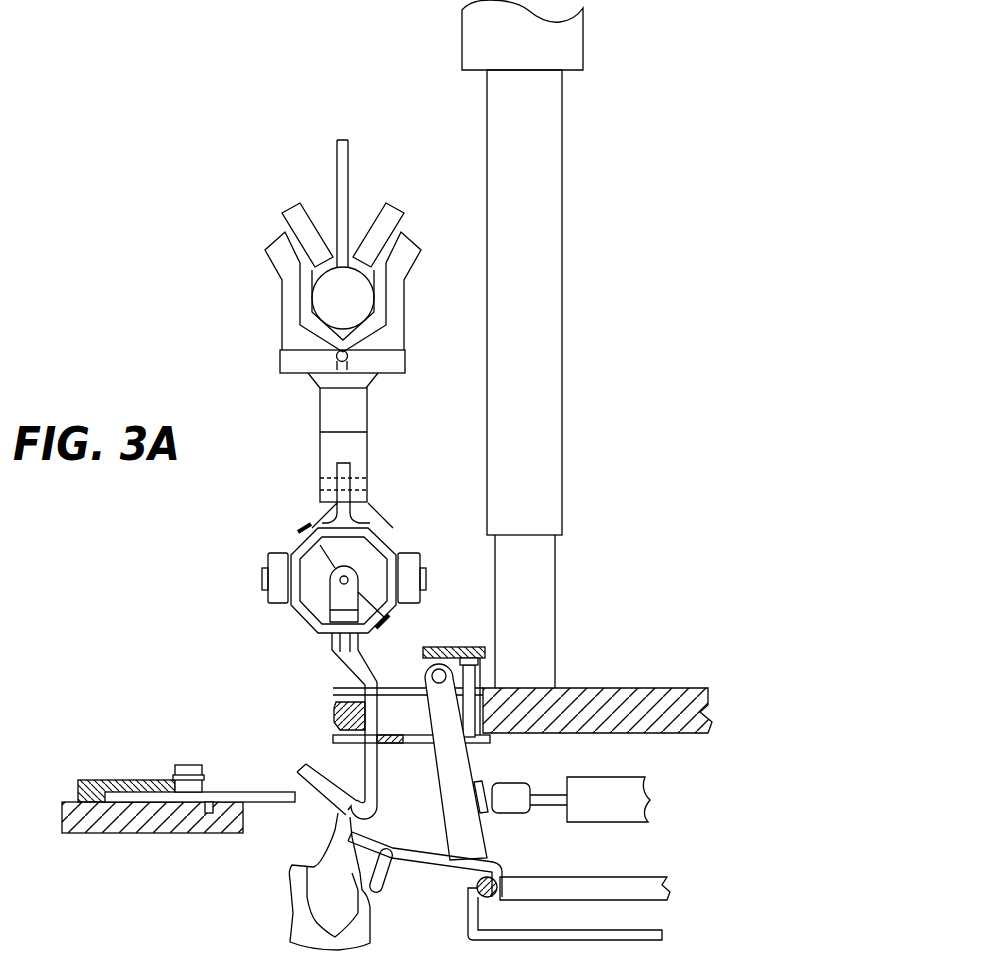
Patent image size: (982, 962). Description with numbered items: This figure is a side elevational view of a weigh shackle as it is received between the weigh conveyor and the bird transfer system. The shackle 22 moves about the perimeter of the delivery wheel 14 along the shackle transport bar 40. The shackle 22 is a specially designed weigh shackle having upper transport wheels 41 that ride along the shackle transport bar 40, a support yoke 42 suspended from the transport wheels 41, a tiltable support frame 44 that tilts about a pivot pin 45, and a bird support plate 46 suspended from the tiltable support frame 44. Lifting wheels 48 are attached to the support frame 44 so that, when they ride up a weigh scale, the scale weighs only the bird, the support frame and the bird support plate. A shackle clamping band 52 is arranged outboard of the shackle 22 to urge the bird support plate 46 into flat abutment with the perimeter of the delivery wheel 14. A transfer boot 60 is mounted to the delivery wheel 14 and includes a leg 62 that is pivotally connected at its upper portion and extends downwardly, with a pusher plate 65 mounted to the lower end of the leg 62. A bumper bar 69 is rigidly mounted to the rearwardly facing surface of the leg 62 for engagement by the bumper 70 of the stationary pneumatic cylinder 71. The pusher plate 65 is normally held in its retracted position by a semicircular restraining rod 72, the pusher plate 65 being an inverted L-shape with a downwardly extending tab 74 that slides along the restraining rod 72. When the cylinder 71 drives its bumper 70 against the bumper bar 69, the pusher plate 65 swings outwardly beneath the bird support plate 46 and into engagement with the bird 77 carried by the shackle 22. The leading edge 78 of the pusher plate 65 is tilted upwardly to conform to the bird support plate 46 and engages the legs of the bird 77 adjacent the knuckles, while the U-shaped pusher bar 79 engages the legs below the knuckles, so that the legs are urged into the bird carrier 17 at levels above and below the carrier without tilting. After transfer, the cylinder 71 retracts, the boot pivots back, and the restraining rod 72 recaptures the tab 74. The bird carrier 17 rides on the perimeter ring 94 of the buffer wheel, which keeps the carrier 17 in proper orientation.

The delivery wheel 14 is at (610, 688).
The bird carrier 17 is at (253, 792).
The shackle 22 is at (232, 581).
The shackle transport bar 40 is at (355, 313).
The upper transport wheels 41 is at (290, 215).
The support yoke 42 is at (355, 447).
The tiltable support frame 44 is at (378, 537).
The pivot pin 45 is at (328, 484).
The bird support plate 46 is at (372, 757).
The lifting wheels 48 is at (408, 562).
The shackle clamping band 52 is at (332, 718).
The transfer boot 60 is at (496, 849).
The leg 62 is at (461, 770).
The pusher plate 65 is at (433, 850).
The bumper bar 69 is at (485, 812).
The bumper 70 is at (513, 793).
The pneumatic cylinder 71 is at (603, 812).
The restraining rod 72 is at (474, 877).
The downwardly extending tab 74 is at (503, 880).
The bird 77 is at (297, 918).
The leading edge 78 is at (347, 837).
The U-shaped pusher bar 79 is at (383, 890).
The perimeter ring 94 is at (170, 835).